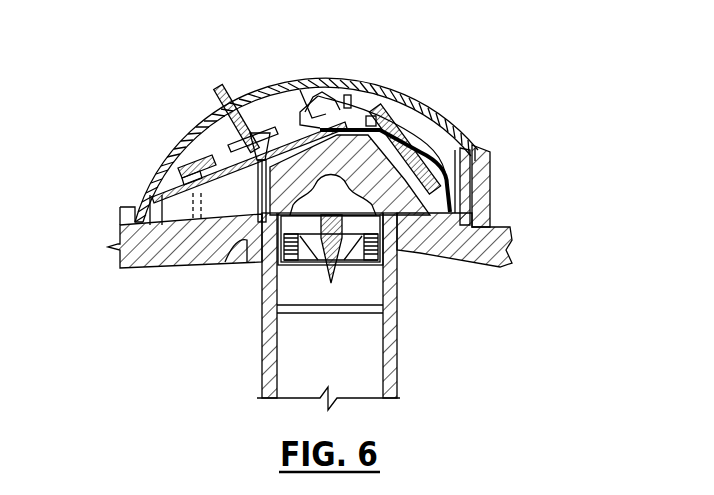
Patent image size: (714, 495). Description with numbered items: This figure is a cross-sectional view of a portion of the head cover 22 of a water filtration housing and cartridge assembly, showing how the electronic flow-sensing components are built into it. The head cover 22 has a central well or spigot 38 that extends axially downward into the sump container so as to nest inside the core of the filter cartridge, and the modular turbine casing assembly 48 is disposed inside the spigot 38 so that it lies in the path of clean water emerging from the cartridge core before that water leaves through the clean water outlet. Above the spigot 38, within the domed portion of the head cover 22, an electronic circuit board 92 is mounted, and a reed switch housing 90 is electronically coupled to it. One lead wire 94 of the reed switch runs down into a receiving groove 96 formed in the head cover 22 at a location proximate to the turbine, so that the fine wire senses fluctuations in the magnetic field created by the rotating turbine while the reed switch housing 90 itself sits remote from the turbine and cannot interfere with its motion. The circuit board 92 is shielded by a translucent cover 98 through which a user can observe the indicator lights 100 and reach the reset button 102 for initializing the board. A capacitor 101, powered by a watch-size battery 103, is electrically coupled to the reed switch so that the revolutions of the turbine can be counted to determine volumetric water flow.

The head cover 22 is at (493, 183).
The spigot 38 is at (384, 355).
The modular turbine casing assembly 48 is at (400, 302).
The reed switch housing 90 is at (258, 203).
The electronic circuit board 92 is at (152, 172).
The lead wire 94 is at (247, 262).
The receiving groove 96 is at (218, 250).
The translucent cover 98 is at (431, 102).
The indicator lights 100 is at (314, 90).
The capacitor 101 is at (180, 137).
The reset button 102 is at (223, 88).
The battery 103 is at (425, 135).